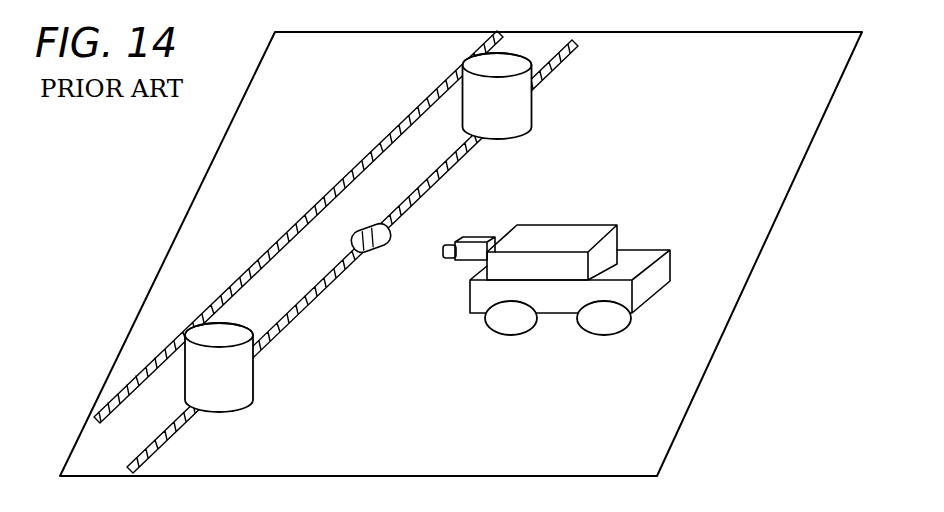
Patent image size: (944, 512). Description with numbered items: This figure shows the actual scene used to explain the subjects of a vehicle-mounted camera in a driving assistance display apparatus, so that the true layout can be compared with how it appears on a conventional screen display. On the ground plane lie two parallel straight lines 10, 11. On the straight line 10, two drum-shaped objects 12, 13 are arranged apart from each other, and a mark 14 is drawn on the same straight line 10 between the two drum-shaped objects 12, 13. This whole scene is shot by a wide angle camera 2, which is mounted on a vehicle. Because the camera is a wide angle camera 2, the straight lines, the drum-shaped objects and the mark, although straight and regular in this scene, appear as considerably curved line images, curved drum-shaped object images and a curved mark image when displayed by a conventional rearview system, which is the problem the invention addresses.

The wide angle camera 2 is at (483, 237).
The straight line 10 is at (568, 57).
The straight line 11 is at (352, 171).
The drum-shaped object 12 is at (523, 118).
The drum-shaped object 13 is at (250, 382).
The mark 14 is at (375, 253).